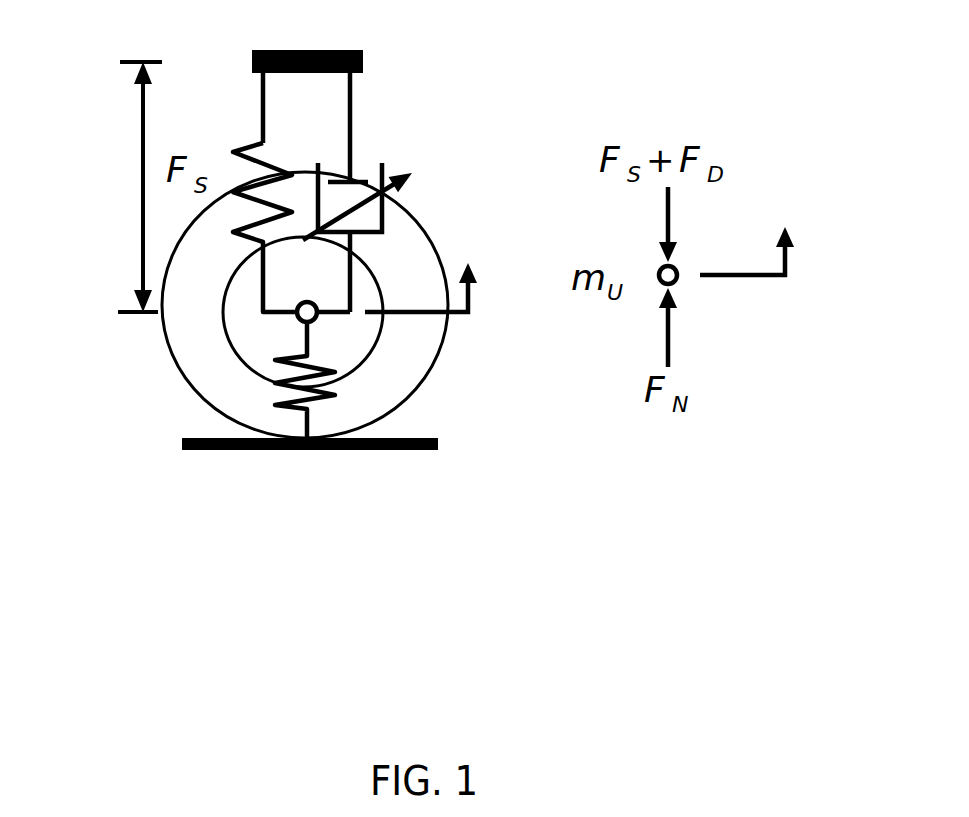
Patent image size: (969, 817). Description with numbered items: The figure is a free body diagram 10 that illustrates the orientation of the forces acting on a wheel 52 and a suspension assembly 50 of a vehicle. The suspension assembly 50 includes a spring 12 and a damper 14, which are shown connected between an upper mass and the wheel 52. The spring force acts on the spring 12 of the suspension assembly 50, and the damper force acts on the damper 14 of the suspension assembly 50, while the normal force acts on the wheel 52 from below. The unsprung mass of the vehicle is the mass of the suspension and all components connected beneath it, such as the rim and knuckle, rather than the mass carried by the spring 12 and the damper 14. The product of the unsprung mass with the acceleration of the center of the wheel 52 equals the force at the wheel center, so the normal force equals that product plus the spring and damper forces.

The free body diagram 10 is at (63, 596).
The spring 12 is at (232, 149).
The damper 14 is at (384, 207).
The suspension assembly 50 is at (416, 109).
The wheel 52 is at (170, 363).